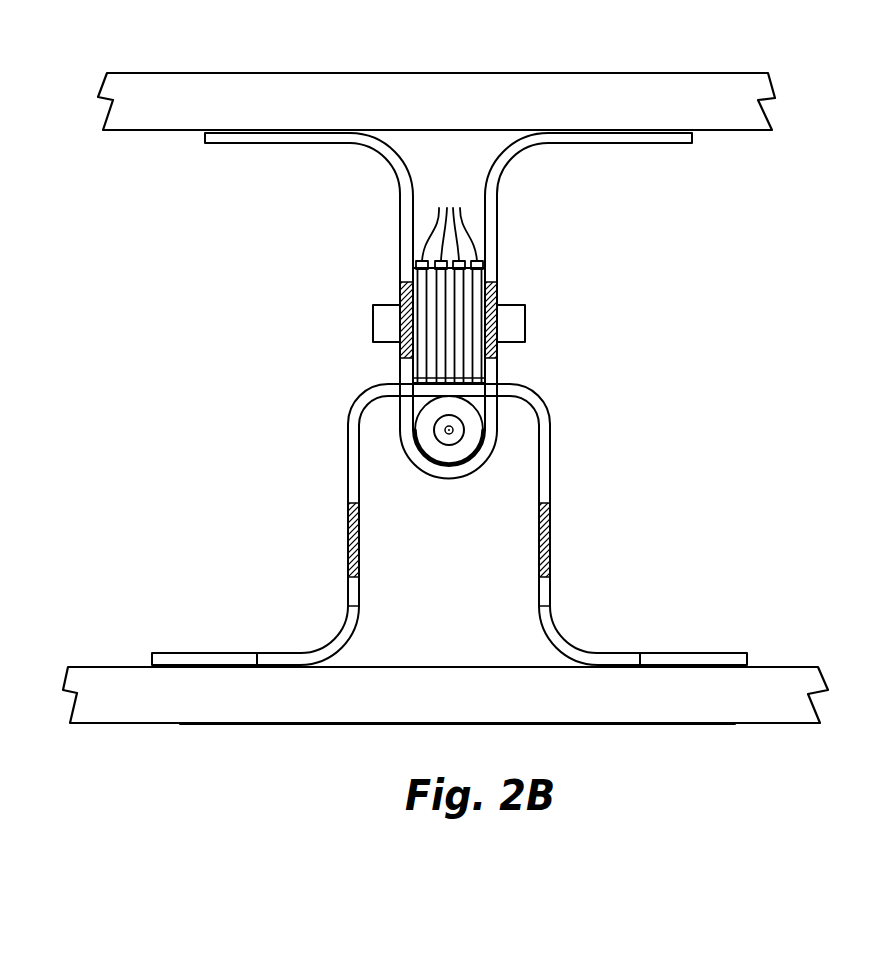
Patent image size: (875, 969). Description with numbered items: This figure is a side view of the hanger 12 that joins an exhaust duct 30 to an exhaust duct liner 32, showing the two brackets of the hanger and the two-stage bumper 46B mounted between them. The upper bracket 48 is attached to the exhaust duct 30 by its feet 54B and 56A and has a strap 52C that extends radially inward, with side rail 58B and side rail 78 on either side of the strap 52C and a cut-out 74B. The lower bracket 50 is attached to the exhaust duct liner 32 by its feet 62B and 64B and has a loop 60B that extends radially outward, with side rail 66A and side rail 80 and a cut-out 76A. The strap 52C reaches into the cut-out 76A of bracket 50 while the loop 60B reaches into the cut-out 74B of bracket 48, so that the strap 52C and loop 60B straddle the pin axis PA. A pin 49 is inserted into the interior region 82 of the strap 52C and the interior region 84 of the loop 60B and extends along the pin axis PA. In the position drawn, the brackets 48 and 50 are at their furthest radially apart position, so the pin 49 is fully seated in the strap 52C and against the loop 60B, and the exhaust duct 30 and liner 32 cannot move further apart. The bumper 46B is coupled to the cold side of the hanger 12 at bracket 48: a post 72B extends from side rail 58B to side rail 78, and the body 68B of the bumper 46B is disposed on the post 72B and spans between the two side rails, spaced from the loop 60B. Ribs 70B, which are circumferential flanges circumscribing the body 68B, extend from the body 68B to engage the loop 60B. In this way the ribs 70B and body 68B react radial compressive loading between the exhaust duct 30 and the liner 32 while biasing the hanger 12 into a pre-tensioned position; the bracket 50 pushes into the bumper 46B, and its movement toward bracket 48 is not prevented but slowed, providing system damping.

The hanger 12 is at (150, 372).
The exhaust duct 30 is at (703, 86).
The exhaust duct liner 32 is at (780, 673).
The two-stage bumper 46B is at (557, 278).
The bracket 48 is at (338, 270).
The pin 49 is at (430, 442).
The bracket 50 is at (625, 432).
The strap 52C is at (497, 366).
The foot 54B is at (643, 144).
The first bracket flange 56A is at (262, 144).
The side rail 58B is at (400, 353).
The loop 60B is at (357, 440).
The foot 62B is at (617, 652).
The foot 64B is at (205, 652).
The side rail 66A is at (347, 537).
The body 68B is at (432, 291).
The ribs 70B is at (449, 227).
The post 72B is at (387, 338).
The cut-out 74B is at (493, 423).
The cut-out 76A is at (353, 503).
The side rail 78 is at (497, 291).
The side rail 80 is at (550, 548).
The interior region 82 is at (423, 403).
The interior region 84 is at (439, 587).
The pin axis PA is at (452, 433).